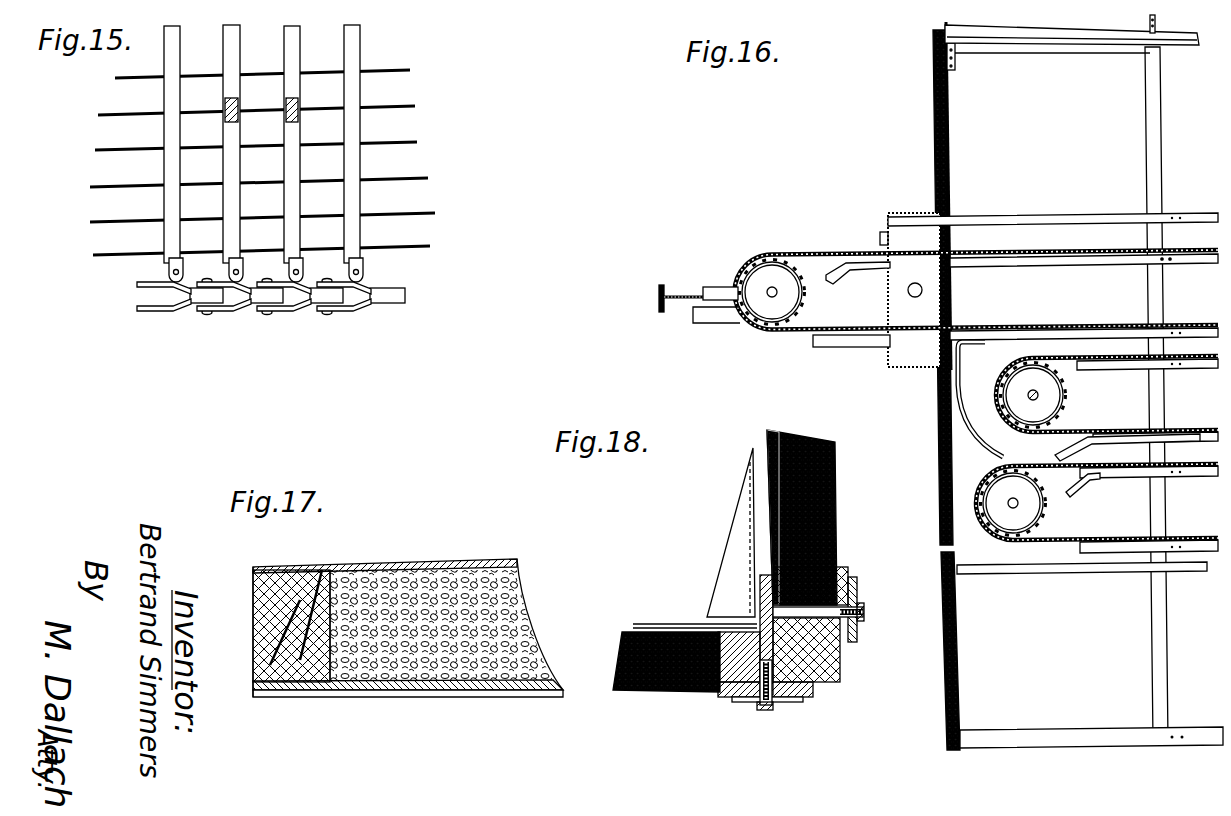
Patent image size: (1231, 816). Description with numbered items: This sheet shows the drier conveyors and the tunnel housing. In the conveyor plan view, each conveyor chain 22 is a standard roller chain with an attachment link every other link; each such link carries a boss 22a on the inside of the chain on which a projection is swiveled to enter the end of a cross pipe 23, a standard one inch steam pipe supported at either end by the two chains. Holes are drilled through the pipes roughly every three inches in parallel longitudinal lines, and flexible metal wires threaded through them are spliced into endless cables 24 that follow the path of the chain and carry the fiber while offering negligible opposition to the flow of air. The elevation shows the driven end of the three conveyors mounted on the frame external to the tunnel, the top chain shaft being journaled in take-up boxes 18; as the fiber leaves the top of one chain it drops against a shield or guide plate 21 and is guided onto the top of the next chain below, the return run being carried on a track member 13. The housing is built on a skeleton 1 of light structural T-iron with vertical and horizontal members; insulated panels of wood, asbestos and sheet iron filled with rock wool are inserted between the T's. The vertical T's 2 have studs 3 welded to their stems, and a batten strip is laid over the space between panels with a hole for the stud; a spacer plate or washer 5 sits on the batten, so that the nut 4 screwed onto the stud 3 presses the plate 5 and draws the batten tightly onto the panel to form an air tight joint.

In FIG. 16, the skeleton of the drier 1 is at (1166, 30).
In FIG. 16, the vertical T 2 is at (1150, 105).
In FIG. 18, the vertical T 2 is at (760, 585).
In FIG. 18, the stud 3 is at (864, 611).
In FIG. 18, the nut 4 is at (860, 616).
In FIG. 18, the spacer plate or washer 5 is at (858, 585).
In FIG. 16, the guide board 13 is at (1092, 245).
In FIG. 16, the take-up box 18 is at (713, 286).
In FIG. 16, the shield or guide plate 21 is at (980, 407).
In FIG. 15, the conveyor chain 22 is at (396, 308).
In FIG. 16, the conveyor chain 22 is at (815, 252).
In FIG. 15, the boss 22a is at (319, 267).
In FIG. 15, the cross pipe 23 is at (298, 144).
In FIG. 15, the endless cable 24 is at (284, 161).